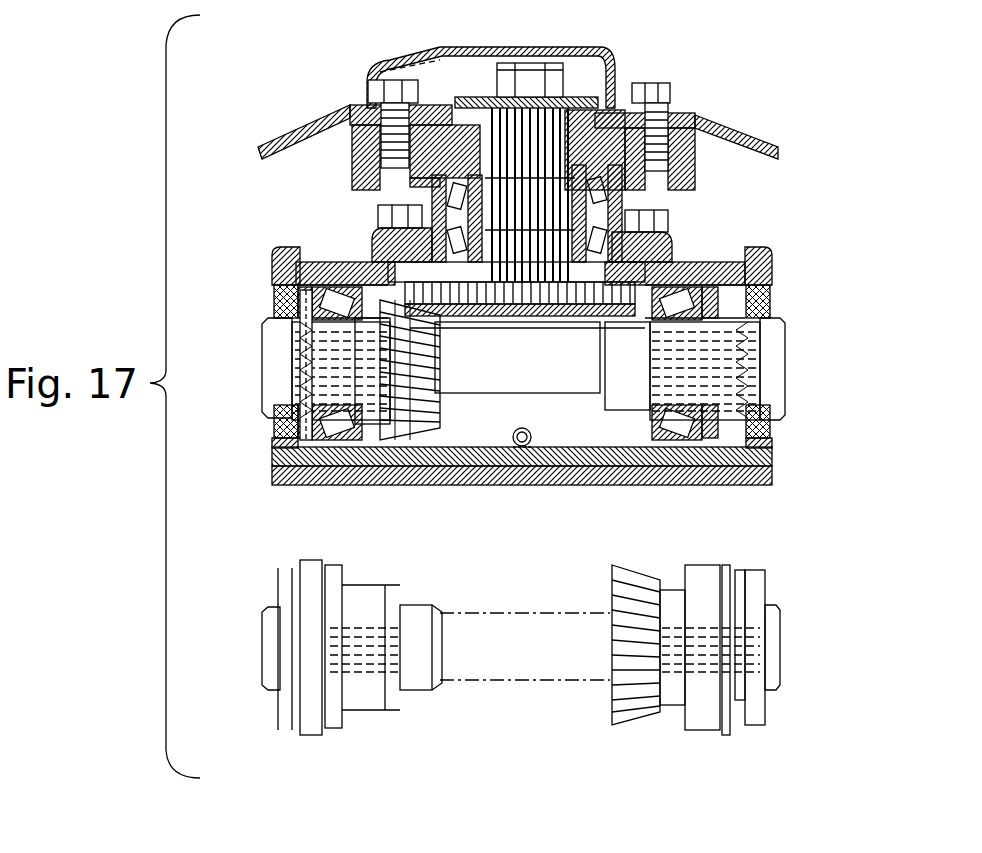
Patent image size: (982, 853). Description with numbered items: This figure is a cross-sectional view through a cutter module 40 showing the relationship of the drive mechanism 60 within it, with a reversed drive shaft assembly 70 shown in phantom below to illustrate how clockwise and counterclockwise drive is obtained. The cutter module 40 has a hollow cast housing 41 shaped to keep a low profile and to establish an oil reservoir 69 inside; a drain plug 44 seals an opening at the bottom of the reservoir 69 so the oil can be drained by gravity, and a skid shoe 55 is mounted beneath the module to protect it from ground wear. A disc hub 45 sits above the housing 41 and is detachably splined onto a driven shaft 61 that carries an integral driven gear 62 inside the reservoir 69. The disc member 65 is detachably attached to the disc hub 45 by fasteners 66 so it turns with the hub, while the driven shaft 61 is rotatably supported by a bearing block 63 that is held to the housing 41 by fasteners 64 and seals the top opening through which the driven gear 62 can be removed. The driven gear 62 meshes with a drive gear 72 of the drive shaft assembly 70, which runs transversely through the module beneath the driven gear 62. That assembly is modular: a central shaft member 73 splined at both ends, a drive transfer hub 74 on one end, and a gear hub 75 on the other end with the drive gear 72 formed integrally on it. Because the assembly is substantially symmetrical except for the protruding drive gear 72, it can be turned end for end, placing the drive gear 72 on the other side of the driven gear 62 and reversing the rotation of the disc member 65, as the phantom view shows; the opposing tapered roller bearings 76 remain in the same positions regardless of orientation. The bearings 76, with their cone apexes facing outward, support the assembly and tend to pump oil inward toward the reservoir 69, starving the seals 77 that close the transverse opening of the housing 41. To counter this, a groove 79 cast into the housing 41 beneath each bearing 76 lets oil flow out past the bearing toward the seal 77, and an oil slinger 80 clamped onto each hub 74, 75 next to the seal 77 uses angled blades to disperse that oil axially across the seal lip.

The cutter module 40 is at (488, 38).
The housing 41 is at (740, 262).
The drain plug 44 is at (535, 485).
The disc hub 45 is at (695, 168).
The skid shoe 55 is at (375, 485).
The drive mechanism 60 is at (240, 345).
The driven shaft 61 is at (537, 198).
The driven gear 62 is at (532, 290).
The bearing block 63 is at (420, 200).
The fasteners 64 is at (380, 216).
The disc member 65 is at (720, 122).
The fasteners 66 is at (385, 62).
The oil reservoir 69 is at (598, 432).
The drive shaft assembly 70 is at (790, 344).
The drive gear 72 is at (440, 430).
The central shaft member 73 is at (550, 375).
The drive transfer hub 74 is at (782, 396).
The gear hub 75 is at (268, 400).
The tapered roller bearings 76 is at (690, 290).
The seals 77 is at (262, 300).
The groove 79 is at (392, 442).
The oil slinger 80 is at (262, 330).